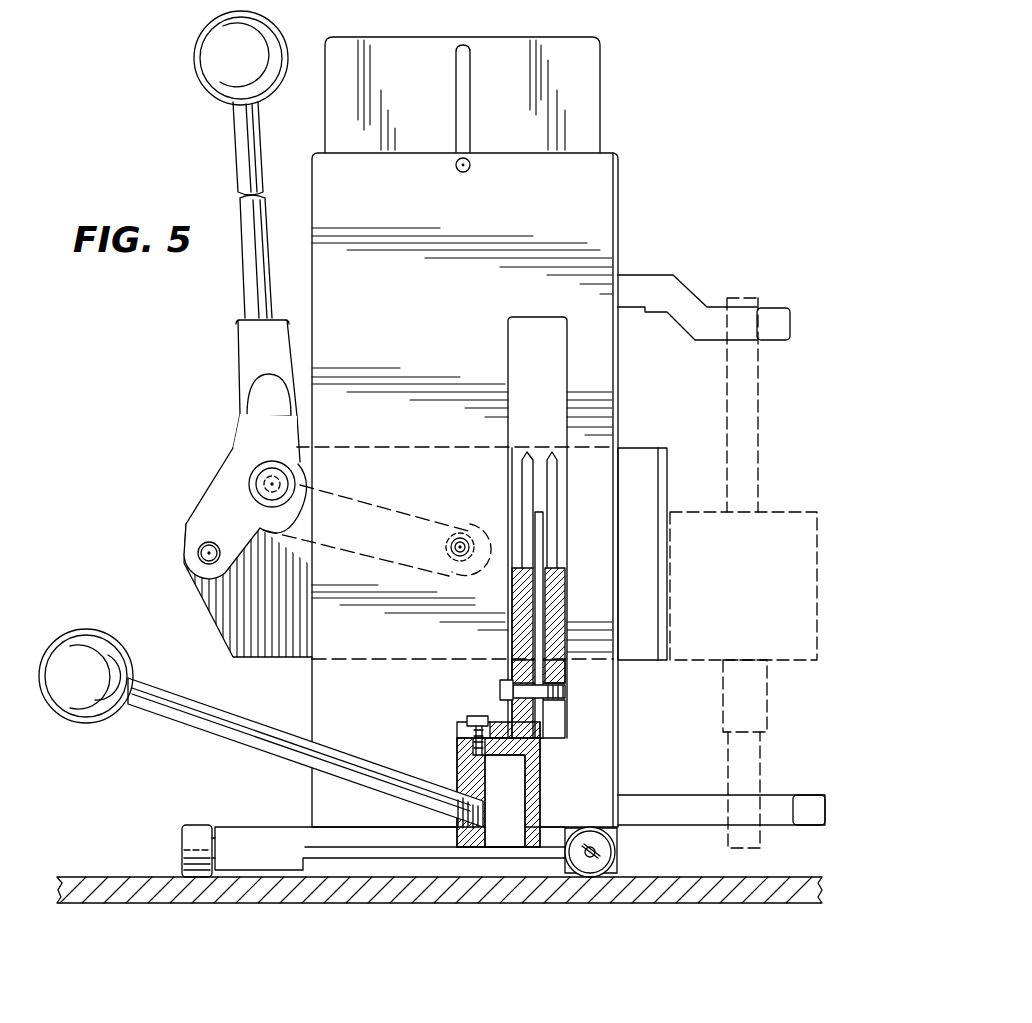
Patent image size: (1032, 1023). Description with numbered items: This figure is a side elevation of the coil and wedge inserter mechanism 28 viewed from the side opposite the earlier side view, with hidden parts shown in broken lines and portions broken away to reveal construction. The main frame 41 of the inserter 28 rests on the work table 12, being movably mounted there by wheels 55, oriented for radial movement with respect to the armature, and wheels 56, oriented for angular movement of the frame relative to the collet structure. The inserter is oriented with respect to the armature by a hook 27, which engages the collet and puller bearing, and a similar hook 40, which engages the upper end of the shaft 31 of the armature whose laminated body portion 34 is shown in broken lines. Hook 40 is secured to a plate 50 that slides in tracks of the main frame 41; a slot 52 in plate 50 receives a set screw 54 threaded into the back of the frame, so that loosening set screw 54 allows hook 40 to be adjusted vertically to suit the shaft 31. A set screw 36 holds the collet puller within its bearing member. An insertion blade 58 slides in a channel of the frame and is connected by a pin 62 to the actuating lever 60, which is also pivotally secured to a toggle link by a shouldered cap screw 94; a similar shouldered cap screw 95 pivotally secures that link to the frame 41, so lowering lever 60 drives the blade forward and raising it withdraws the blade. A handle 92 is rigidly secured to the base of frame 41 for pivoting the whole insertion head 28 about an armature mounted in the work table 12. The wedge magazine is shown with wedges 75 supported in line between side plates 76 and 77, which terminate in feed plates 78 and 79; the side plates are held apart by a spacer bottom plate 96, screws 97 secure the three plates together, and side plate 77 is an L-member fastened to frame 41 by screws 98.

The work table 12 is at (386, 895).
The hook 27 is at (780, 822).
The inserter mechanism 28 is at (628, 183).
The shaft of the armature 31 is at (760, 390).
The laminated body portion of the armature 34 is at (788, 512).
The set screw 36 is at (645, 448).
The hook 40 is at (777, 312).
The main frame 41 is at (532, 798).
The plate 50 is at (580, 73).
The slot 52 is at (464, 100).
The set screw 54 is at (470, 168).
The wheels 55 is at (592, 875).
The wheels 56 is at (184, 840).
The insertion blade 58 is at (206, 606).
The actuating lever 60 is at (250, 276).
The pin 62 is at (198, 552).
The wedges 75 is at (543, 535).
The side plate 76 is at (556, 618).
The side plate 77 is at (516, 600).
The feed plate 78 is at (550, 460).
The feed plate 79 is at (522, 460).
The handle 92 is at (210, 732).
The shouldered cap screw 94 is at (264, 482).
The shouldered cap screw 95 is at (460, 533).
The spacer bottom plate 96 is at (540, 724).
The screws 97 is at (503, 686).
The screws 98 is at (474, 716).